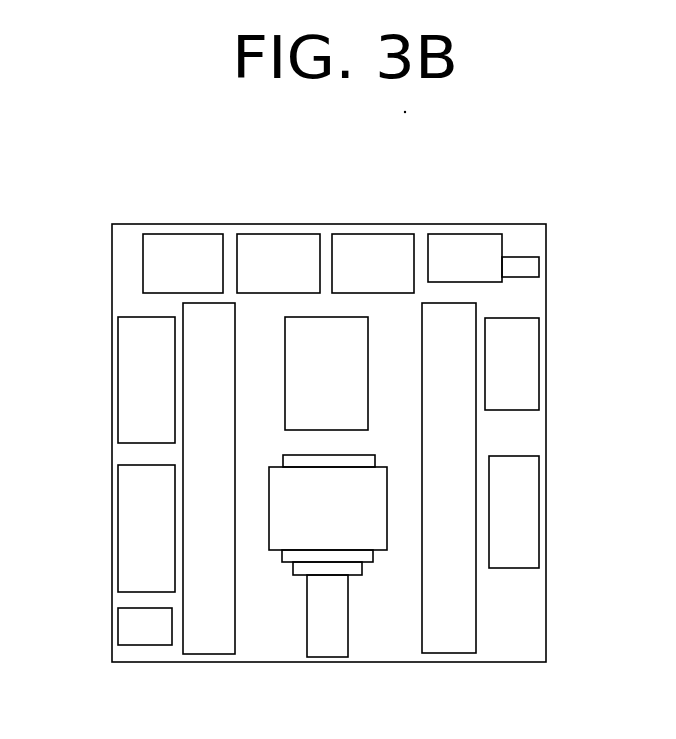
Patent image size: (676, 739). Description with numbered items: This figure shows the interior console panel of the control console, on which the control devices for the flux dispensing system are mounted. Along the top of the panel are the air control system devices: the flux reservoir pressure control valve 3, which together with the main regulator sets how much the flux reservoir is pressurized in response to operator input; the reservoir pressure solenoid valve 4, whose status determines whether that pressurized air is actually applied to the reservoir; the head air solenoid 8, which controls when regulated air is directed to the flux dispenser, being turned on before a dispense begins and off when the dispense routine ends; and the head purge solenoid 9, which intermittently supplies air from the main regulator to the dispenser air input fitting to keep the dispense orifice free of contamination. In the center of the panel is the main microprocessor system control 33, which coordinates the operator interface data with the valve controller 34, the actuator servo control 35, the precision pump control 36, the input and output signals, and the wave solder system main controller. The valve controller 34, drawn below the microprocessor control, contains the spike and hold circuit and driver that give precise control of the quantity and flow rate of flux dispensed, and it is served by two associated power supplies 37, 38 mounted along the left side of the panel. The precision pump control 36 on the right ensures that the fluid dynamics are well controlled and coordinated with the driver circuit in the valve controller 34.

The flux reservoir pressure control valve 3 is at (483, 220).
The reservoir pressure solenoid valve 4 is at (373, 228).
The head air solenoid 8 is at (278, 228).
The head purge solenoid 9 is at (183, 228).
The main microprocessor system control 33 is at (326, 373).
The valve controller 34 is at (322, 580).
The actuator servo control 35 is at (541, 343).
The precision pump control 36 is at (541, 505).
The power supply 37 is at (121, 534).
The power supply 38 is at (121, 370).